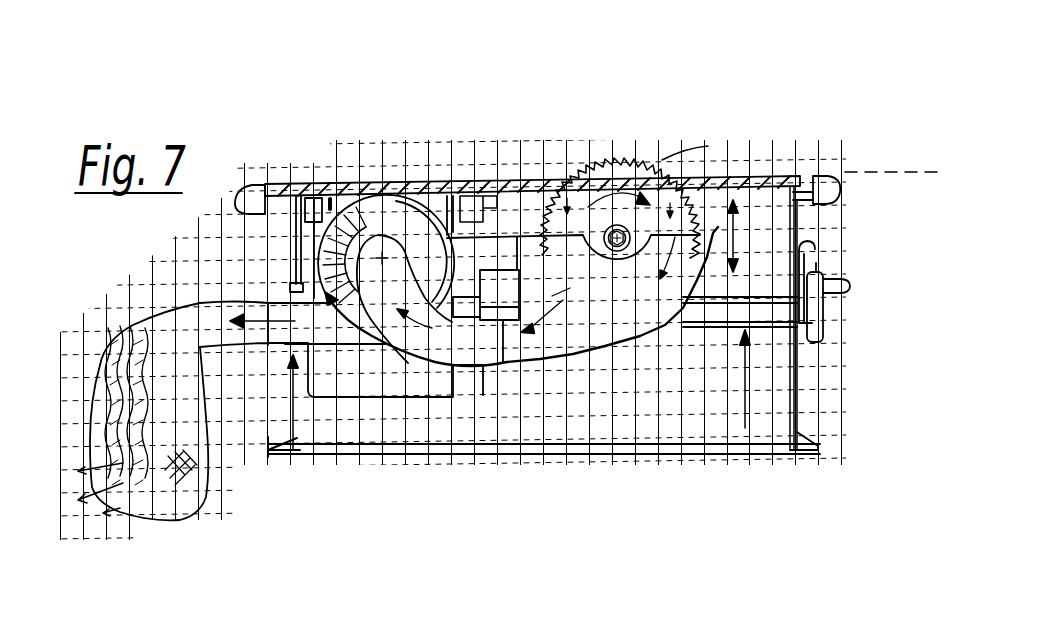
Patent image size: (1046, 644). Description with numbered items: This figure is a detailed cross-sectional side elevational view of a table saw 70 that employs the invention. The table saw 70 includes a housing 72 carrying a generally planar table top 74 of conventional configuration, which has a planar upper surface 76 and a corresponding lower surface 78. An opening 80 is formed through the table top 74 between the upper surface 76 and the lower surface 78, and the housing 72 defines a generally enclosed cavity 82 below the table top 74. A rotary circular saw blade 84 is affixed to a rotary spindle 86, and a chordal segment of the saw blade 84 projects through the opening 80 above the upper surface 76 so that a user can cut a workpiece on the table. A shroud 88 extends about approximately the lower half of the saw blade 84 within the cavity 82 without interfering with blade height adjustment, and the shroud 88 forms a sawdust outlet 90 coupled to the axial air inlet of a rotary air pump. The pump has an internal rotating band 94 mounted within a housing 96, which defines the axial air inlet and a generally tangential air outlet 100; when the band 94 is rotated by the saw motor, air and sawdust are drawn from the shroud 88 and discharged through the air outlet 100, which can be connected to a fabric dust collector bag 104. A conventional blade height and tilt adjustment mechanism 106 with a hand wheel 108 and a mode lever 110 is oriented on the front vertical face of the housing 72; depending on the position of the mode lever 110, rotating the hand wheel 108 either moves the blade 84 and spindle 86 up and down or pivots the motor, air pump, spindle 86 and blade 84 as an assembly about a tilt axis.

The table saw 70 is at (845, 142).
The housing 72 is at (805, 386).
The table top 74 is at (322, 170).
The upper surface 76 is at (383, 197).
The lower surface 78 is at (765, 178).
The opening 80 is at (538, 183).
The enclosed cavity 82 is at (660, 390).
The circular saw blade 84 is at (615, 178).
The rotary spindle 86 is at (605, 222).
The shroud 88 is at (580, 337).
The sawdust outlet 90 is at (406, 212).
The rotating band 94 is at (334, 190).
The housing 96 is at (389, 210).
The air outlet 100 is at (283, 345).
The dust collector bag 104 is at (147, 507).
The blade height and tilt adjustment mechanism 106 is at (870, 163).
The hand wheel 108 is at (842, 274).
The mode lever 110 is at (815, 247).